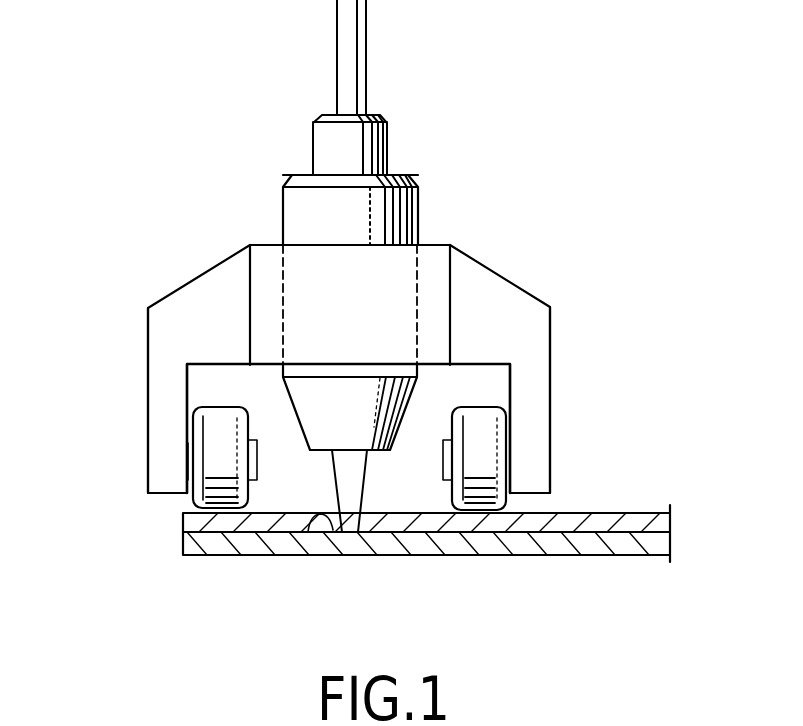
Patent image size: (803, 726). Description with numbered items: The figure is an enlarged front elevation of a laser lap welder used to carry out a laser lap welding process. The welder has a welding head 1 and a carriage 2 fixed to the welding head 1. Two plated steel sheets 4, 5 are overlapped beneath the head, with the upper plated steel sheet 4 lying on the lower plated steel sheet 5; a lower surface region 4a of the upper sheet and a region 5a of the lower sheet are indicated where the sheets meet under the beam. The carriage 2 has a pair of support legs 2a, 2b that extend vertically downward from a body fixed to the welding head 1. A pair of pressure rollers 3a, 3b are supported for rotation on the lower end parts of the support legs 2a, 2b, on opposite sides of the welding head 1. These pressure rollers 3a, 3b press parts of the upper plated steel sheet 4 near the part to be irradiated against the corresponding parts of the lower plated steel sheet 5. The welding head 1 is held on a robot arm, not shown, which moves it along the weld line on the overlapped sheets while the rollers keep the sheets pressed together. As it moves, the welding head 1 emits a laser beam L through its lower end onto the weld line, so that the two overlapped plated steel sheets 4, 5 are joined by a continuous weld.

The welding head 1 is at (418, 210).
The carriage 2 is at (517, 272).
The support leg 2a is at (160, 345).
The support leg 2b is at (538, 341).
The pressure roller 3a is at (208, 425).
The pressure roller 3b is at (495, 422).
The upper plated steel sheet 4 is at (603, 512).
The protective sheet lower surface 4a is at (207, 555).
The lower plated steel sheet 5 is at (580, 545).
The machined groove 5a is at (325, 528).
The laser beam L is at (367, 470).